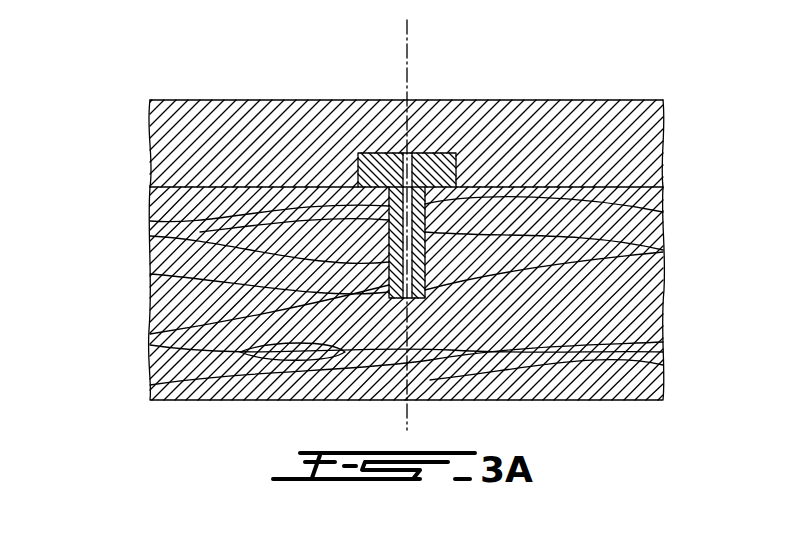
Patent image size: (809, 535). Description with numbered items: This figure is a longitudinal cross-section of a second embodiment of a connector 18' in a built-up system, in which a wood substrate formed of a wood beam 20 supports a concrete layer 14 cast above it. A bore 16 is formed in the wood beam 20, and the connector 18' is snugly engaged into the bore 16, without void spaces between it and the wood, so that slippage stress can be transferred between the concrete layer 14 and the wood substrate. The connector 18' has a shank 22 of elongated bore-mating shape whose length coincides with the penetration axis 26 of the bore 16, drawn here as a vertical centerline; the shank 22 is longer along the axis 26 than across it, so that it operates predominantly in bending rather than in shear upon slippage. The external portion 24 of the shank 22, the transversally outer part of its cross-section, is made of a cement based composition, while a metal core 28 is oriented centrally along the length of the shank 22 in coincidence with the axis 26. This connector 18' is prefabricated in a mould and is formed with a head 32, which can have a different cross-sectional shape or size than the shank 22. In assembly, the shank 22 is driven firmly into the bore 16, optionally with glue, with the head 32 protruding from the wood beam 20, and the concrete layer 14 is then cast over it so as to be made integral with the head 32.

The concrete layer 14 is at (268, 103).
The bore 16 is at (150, 274).
The connector 18' is at (568, 242).
The wood beam 20 is at (614, 382).
The shank 22 is at (663, 212).
The external portion 24 is at (150, 334).
The penetration axis 26 is at (408, 33).
The metal core 28 is at (150, 221).
The head 32 is at (456, 168).